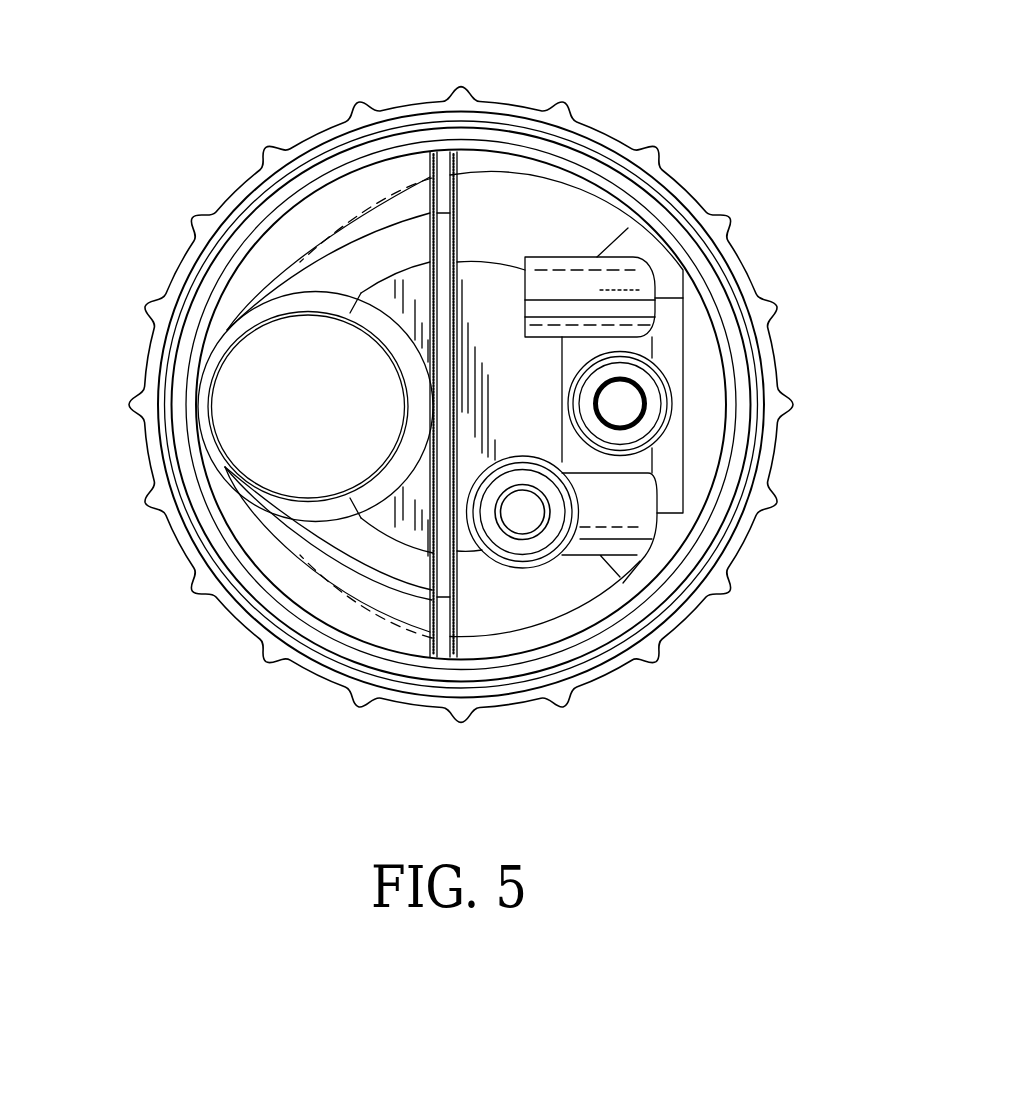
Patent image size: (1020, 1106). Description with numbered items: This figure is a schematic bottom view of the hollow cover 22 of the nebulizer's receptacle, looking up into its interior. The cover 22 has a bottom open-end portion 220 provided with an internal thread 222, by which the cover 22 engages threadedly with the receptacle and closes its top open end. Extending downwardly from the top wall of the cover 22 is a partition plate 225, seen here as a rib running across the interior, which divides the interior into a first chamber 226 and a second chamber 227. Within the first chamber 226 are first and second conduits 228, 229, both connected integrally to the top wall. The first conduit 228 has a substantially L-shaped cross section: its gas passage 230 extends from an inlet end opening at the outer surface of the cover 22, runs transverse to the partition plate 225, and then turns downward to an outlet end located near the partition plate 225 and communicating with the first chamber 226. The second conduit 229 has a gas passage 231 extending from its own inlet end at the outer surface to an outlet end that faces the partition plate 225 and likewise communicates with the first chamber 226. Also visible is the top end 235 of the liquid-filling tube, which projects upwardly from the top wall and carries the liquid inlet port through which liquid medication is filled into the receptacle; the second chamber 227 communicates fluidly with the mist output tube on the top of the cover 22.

The cover 22 is at (203, 170).
The bottom open-end portion 220 is at (183, 272).
The internal thread 222 is at (752, 458).
The partition plate 225 is at (432, 240).
The first chamber 226 is at (498, 358).
The second chamber 227 is at (338, 248).
The first conduit 228 is at (628, 515).
The second conduit 229 is at (578, 263).
The gas passage 230 is at (525, 516).
The gas passage 231 is at (617, 293).
The top end 235 is at (621, 406).